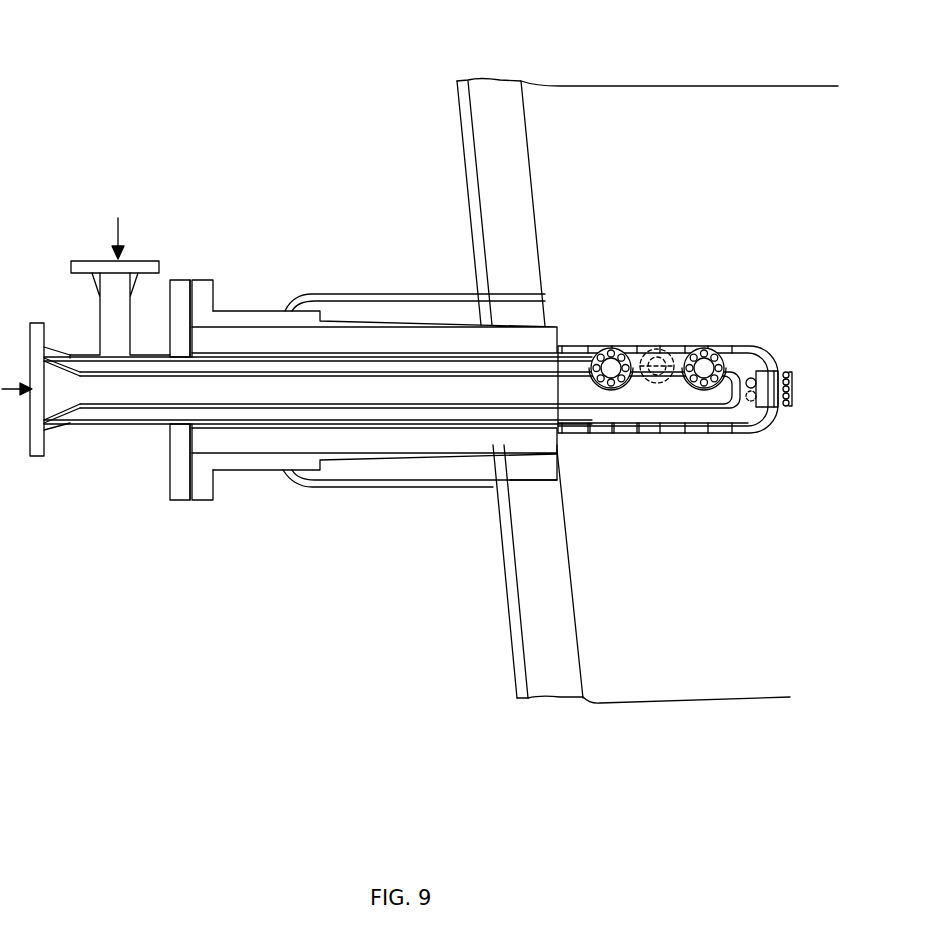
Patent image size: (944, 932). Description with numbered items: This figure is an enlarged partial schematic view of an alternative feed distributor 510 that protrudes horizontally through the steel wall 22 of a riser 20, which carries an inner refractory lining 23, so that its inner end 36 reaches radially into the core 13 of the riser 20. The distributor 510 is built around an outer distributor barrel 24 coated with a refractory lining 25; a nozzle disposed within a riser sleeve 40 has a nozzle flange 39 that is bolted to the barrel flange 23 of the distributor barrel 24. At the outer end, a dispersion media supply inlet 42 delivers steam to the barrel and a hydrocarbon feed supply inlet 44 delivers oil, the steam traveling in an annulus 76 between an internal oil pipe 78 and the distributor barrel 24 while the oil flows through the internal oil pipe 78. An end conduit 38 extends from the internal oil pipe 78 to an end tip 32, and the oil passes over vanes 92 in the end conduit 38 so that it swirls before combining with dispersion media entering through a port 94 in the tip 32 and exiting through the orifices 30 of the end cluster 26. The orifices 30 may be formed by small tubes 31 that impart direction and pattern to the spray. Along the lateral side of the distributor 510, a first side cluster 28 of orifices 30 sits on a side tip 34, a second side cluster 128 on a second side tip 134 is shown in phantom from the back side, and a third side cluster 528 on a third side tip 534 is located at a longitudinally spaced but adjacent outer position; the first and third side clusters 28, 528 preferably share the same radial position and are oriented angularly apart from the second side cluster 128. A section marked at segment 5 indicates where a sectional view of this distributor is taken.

The distributor 510 is at (192, 127).
The riser 20 is at (582, 173).
The wall 22 is at (520, 675).
The refractory lining 23 is at (176, 456).
The distributor barrel 24 is at (602, 423).
The refractory lining 25 is at (625, 432).
The end cluster 26 is at (822, 412).
The first side cluster 28 is at (717, 295).
The orifices 30 is at (602, 347).
The tubes 31 is at (615, 350).
The end tip 32 is at (786, 408).
The side tip 34 is at (682, 347).
The inner end 36 is at (850, 386).
The end conduit 38 is at (270, 317).
The nozzle flange 39 is at (210, 292).
The riser sleeve 40 is at (333, 295).
The dispersion media supply inlet 42 is at (107, 327).
The hydrocarbon feed supply inlet 44 is at (70, 398).
The annulus 76 is at (157, 363).
The internal oil pipe 78 is at (372, 378).
The vanes 92 is at (731, 372).
The port 94 is at (752, 347).
The second side cluster 128 is at (658, 335).
The second side tip 134 is at (673, 376).
The third side cluster 528 is at (585, 332).
The third side tip 534 is at (623, 378).
The segment 5- 5 is at (736, 190).
The core 13 is at (882, 585).